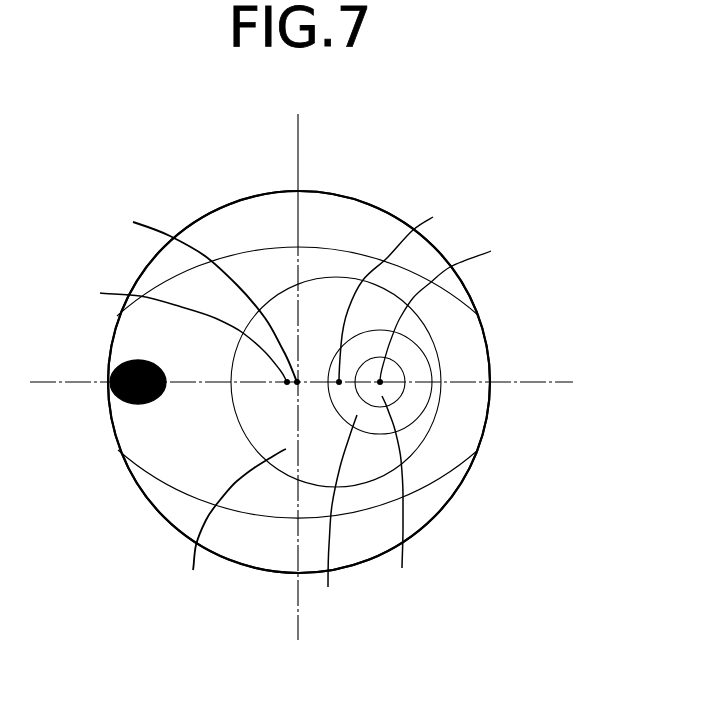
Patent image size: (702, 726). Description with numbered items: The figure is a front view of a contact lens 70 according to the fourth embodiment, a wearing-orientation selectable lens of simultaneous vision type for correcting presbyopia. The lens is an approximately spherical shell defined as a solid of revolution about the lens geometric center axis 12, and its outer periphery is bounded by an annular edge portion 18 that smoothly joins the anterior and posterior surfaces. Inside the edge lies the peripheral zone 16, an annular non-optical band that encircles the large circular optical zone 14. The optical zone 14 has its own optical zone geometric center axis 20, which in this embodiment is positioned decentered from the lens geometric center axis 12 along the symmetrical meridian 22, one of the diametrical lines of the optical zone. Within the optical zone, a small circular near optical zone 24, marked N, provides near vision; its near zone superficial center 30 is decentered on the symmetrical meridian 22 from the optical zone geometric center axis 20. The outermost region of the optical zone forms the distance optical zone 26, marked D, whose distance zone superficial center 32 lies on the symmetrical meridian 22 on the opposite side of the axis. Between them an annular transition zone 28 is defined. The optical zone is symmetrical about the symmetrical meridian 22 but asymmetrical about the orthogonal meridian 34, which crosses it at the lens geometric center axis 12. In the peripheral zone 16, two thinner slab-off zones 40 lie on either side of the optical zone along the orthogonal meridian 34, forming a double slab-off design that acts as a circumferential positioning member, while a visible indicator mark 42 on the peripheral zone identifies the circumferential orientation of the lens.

The lens geometric center axis 12 is at (201, 295).
The optical zone 14 is at (440, 314).
The peripheral zone 16 is at (479, 359).
The edge portion 18 is at (491, 408).
The optical zone geometric center axis 20 is at (399, 291).
The symmetrical meridian 22 is at (557, 380).
The near optical zone 24 is at (398, 495).
The distance optical zone 26 is at (233, 522).
The transition zone 28 is at (338, 515).
The near zone superficial center 30 is at (450, 308).
The distance zone superficial center 32 is at (182, 331).
The orthogonal meridian 34 is at (298, 146).
The slab-off zones 40 is at (333, 217).
The indicator mark 42 is at (116, 370).
The contact lens 70 is at (486, 195).